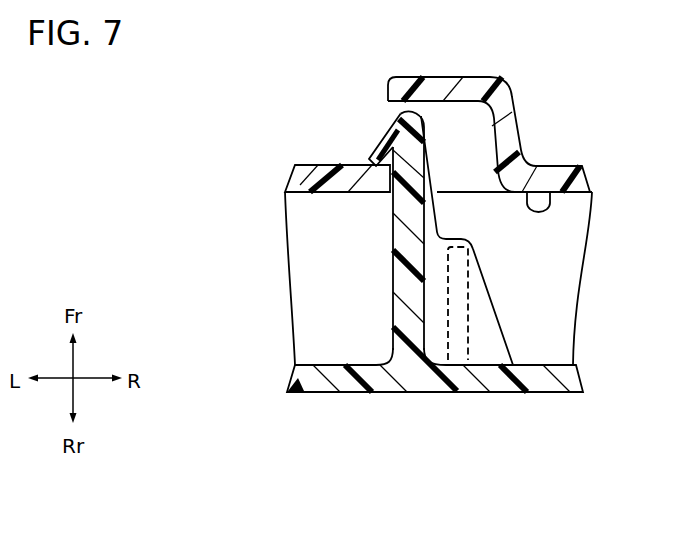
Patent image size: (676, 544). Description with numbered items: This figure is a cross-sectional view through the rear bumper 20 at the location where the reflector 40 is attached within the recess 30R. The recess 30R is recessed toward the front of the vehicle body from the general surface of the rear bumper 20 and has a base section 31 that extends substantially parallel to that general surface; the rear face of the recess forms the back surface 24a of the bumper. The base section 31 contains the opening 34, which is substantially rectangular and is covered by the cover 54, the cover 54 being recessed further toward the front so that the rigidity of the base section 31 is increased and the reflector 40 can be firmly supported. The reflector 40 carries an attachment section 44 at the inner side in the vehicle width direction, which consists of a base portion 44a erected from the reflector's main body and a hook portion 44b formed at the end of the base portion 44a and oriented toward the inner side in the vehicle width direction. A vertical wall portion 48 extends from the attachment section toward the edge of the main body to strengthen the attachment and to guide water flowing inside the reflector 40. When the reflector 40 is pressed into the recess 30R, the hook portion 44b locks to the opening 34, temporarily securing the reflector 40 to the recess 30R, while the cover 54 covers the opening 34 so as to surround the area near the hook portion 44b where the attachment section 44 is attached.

The rear bumper 20 is at (248, 84).
The recess 30R is at (316, 162).
The cover 54 is at (433, 78).
The back surface 24a is at (559, 165).
The base section 31 is at (531, 207).
The hook portion 44b is at (386, 150).
The opening 34 is at (404, 192).
The base portion 44a is at (393, 265).
The attachment section 44 is at (497, 298).
The vertical wall portion 48 is at (469, 325).
The reflector 40 is at (326, 396).